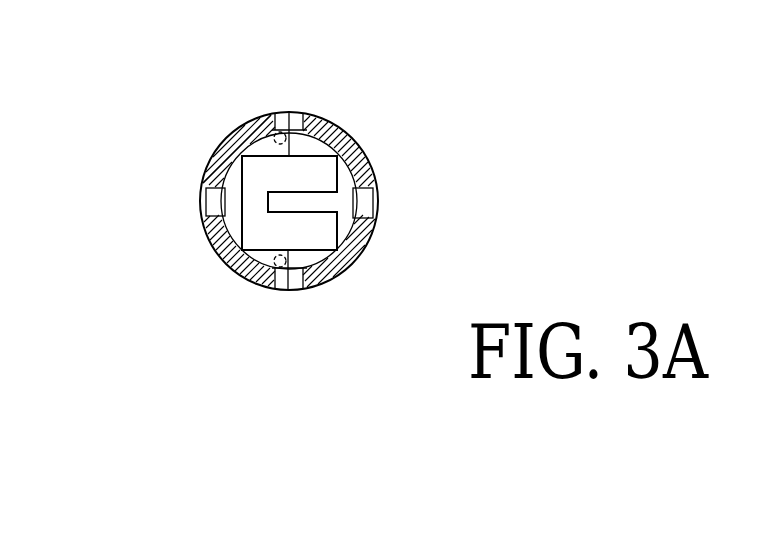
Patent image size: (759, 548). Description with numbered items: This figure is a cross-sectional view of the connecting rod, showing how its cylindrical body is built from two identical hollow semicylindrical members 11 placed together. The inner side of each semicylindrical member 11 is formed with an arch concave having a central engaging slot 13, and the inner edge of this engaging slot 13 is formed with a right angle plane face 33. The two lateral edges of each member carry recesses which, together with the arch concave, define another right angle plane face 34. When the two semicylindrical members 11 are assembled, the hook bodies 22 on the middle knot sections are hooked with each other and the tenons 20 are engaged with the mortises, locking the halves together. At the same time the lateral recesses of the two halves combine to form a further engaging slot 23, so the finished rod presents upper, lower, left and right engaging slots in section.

The semicylindrical member 11 is at (356, 265).
The engaging slot 13 is at (215, 205).
The tenon 20 is at (281, 262).
The hook body 22 is at (308, 200).
The engaging slot 23 is at (300, 117).
The right angle plane face 33 is at (205, 177).
The right angle plane face 34 is at (272, 127).